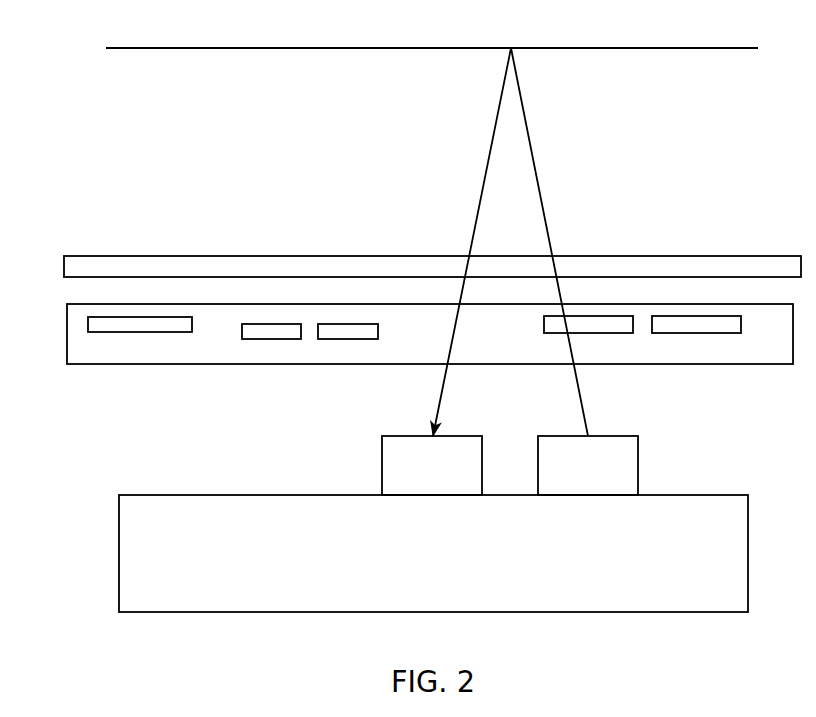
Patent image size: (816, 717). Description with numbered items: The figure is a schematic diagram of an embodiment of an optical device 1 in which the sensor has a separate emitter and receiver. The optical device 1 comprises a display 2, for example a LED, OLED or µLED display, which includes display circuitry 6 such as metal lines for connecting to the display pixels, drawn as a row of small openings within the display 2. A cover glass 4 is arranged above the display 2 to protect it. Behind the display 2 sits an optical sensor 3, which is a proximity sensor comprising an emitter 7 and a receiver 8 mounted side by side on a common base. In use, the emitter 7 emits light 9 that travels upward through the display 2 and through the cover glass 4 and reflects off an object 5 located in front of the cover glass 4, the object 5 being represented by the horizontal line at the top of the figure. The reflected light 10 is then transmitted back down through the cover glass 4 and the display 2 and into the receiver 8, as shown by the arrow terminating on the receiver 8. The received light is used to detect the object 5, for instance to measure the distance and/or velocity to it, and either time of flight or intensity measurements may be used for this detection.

The optical device 1 is at (738, 228).
The display 2 is at (96, 304).
The optical sensor 3 is at (731, 403).
The cover glass 4 is at (129, 256).
The object 5 is at (180, 49).
The display circuitry 6 is at (137, 333).
The emitter 7 is at (638, 455).
The receiver 8 is at (382, 455).
The light 9 is at (540, 184).
The reflected light 10 is at (478, 205).